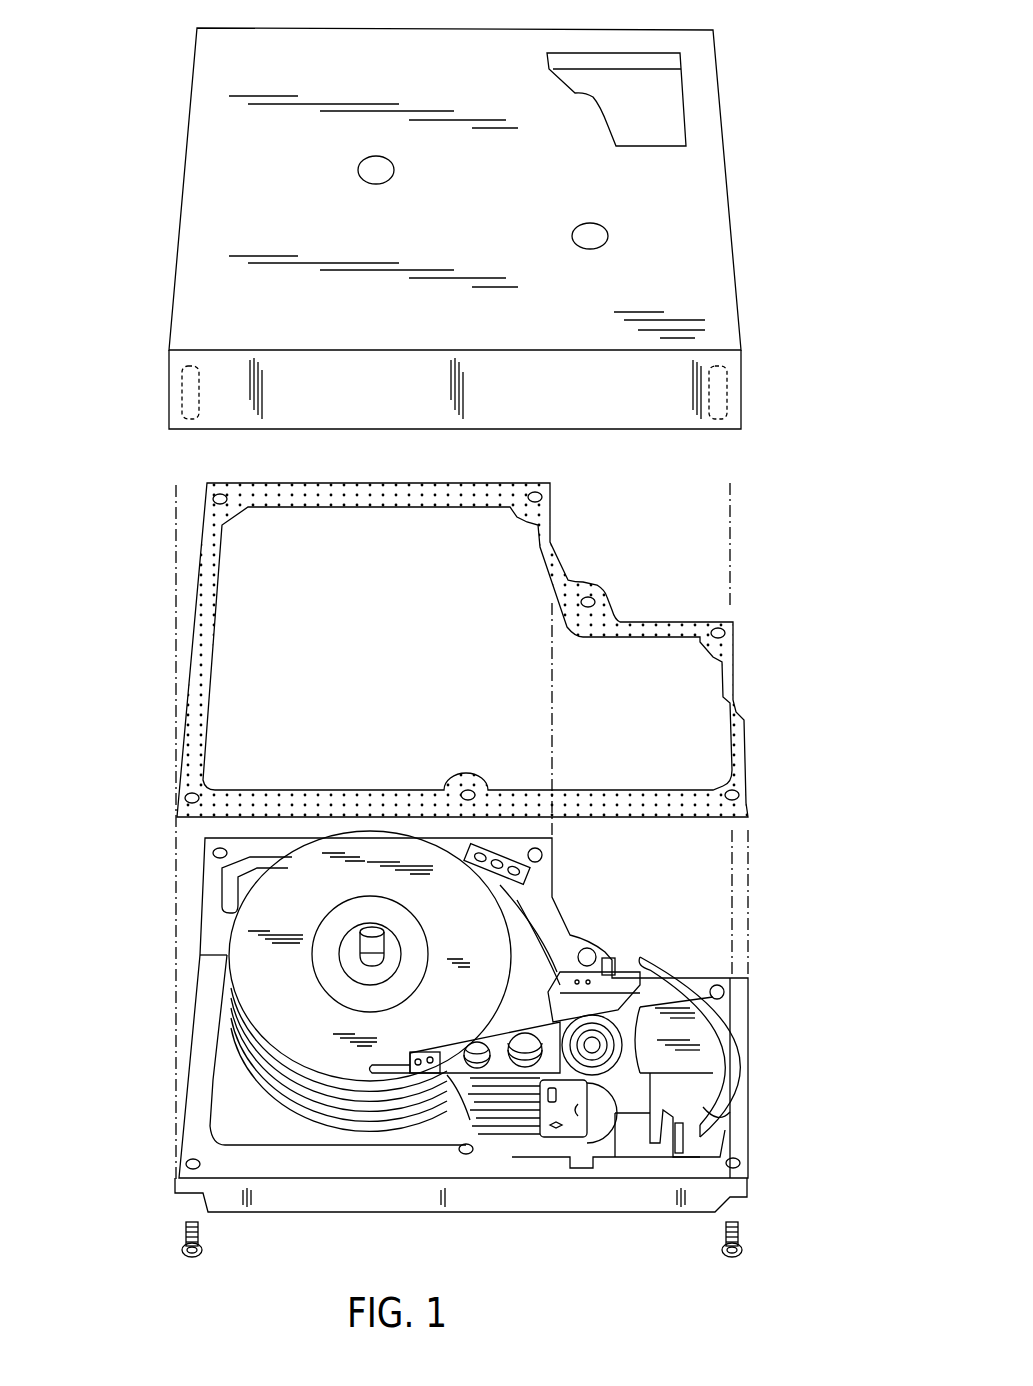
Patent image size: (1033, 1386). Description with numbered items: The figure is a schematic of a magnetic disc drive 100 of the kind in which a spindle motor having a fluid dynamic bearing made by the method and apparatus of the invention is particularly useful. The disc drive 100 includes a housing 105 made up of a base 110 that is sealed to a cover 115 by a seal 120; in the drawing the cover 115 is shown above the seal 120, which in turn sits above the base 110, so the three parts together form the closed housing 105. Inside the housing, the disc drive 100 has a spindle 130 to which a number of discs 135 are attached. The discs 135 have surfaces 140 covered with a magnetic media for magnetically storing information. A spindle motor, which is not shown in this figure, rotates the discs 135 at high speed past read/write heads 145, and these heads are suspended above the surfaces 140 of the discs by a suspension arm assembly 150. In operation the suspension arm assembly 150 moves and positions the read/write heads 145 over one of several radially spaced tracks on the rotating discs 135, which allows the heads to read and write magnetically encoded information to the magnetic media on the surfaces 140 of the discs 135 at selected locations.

The disc drive 100 is at (155, 122).
The housing 105 is at (739, 96).
The base 110 is at (740, 1072).
The cover 115 is at (733, 202).
The seal 120 is at (738, 698).
The spindle 130 is at (310, 962).
The discs 135 is at (347, 967).
The surfaces 140 is at (307, 1036).
The read/write heads 145 is at (372, 1073).
The suspension arm assembly 150 is at (497, 1138).